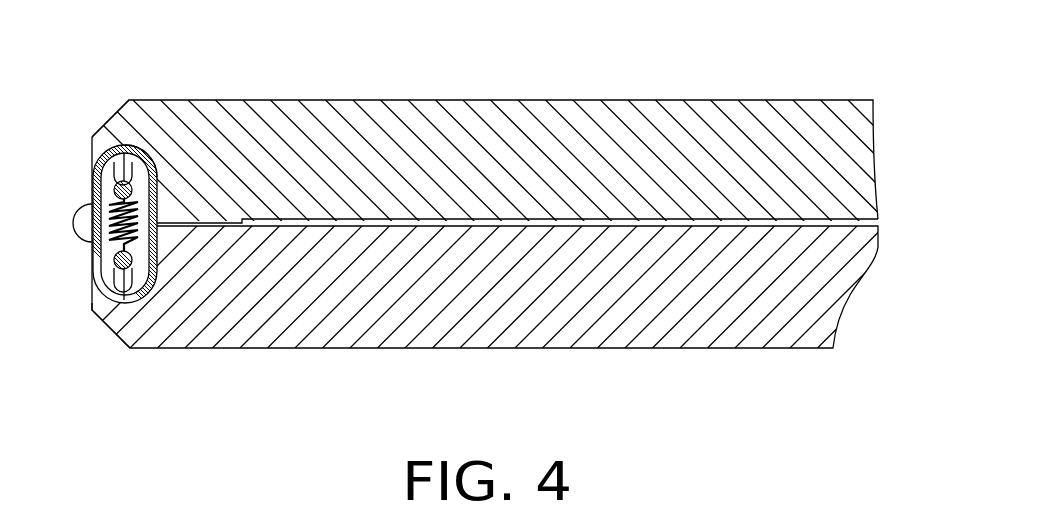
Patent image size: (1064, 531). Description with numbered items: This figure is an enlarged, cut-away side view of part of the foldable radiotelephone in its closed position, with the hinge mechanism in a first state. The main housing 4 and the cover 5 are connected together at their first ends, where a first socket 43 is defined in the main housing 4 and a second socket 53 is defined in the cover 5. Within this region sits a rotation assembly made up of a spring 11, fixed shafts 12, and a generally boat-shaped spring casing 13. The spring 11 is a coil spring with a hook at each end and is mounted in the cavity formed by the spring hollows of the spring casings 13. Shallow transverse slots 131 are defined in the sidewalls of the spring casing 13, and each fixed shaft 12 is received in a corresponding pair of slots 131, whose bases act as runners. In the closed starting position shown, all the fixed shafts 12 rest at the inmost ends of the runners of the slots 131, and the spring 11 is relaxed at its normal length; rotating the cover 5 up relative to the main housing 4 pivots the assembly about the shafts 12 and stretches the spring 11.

The main housing 4 is at (518, 308).
The cover 5 is at (300, 117).
The spring 11 is at (110, 252).
The fixed shaft 12 is at (97, 146).
The spring casing 13 is at (91, 188).
The transverse slot 131 is at (143, 150).
The first socket 43 is at (91, 303).
The second socket 53 is at (95, 138).